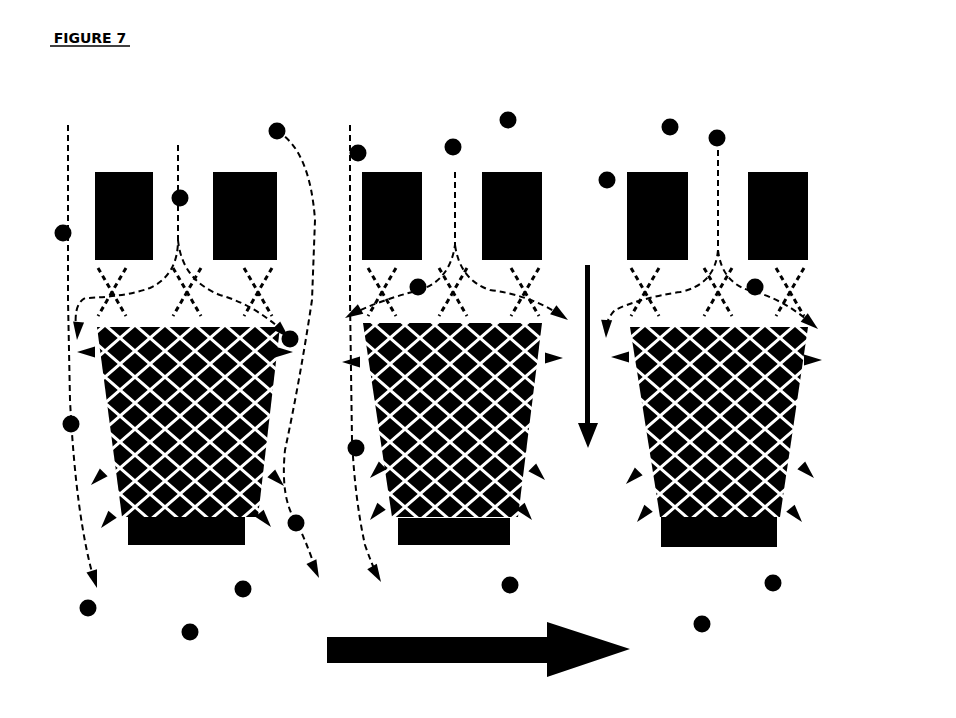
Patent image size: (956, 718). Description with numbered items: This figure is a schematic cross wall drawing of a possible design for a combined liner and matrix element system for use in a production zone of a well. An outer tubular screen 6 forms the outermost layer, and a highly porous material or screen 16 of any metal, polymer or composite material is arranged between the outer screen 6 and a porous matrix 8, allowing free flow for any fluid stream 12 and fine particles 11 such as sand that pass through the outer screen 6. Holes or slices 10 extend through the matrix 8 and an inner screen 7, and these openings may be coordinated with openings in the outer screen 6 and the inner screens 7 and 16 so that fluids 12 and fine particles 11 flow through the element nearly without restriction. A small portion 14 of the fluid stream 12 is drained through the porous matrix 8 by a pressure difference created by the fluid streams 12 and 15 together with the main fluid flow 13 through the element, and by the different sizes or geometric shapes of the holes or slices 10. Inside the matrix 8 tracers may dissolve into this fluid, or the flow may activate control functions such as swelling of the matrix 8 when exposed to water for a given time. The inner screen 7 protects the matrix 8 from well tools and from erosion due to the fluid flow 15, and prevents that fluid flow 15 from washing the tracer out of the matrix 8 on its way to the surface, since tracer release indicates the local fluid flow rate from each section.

The outer screen 6 is at (140, 171).
The inner screen 7 is at (512, 538).
The matrix 8 is at (797, 404).
The holes or slices 10 is at (588, 492).
The fine particles 11 is at (503, 113).
The fluid stream 12 is at (69, 152).
The main fluid flow 13 is at (587, 265).
The small portion of fluid stream 14 is at (820, 362).
The fluid flow along element 15 is at (430, 636).
The highly porous material or screen 16 is at (802, 278).